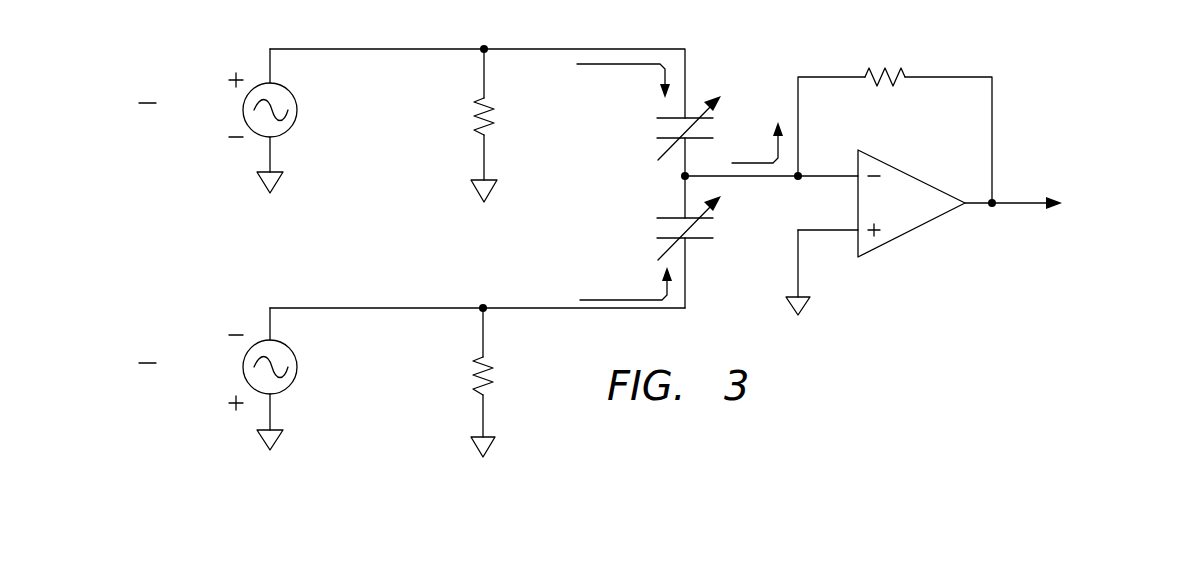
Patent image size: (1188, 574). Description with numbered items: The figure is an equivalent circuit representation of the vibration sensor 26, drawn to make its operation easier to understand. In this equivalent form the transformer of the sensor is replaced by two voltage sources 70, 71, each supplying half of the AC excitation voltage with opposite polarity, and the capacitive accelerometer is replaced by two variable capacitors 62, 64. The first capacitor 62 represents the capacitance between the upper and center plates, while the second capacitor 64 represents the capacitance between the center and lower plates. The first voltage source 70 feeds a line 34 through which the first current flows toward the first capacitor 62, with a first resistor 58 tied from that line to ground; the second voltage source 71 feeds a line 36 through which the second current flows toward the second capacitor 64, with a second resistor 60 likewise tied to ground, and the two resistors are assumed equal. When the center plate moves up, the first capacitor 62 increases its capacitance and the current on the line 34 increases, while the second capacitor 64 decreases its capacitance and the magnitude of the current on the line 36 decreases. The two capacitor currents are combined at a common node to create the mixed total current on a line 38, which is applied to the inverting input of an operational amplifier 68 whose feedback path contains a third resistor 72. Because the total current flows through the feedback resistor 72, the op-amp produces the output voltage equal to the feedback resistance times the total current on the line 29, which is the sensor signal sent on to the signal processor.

The vibration sensor 26 is at (655, 235).
The line 29 is at (1021, 208).
The line 34 is at (597, 49).
The line 36 is at (528, 307).
The line 38 is at (753, 177).
The resistor R1 58 is at (477, 112).
The resistor R2 60 is at (474, 370).
The capacitor C1 62 is at (712, 128).
The capacitor C2 64 is at (713, 227).
The operational amplifier 68 is at (915, 228).
The voltage source 70 is at (293, 97).
The voltage source 71 is at (295, 352).
The resistor R3 72 is at (880, 84).